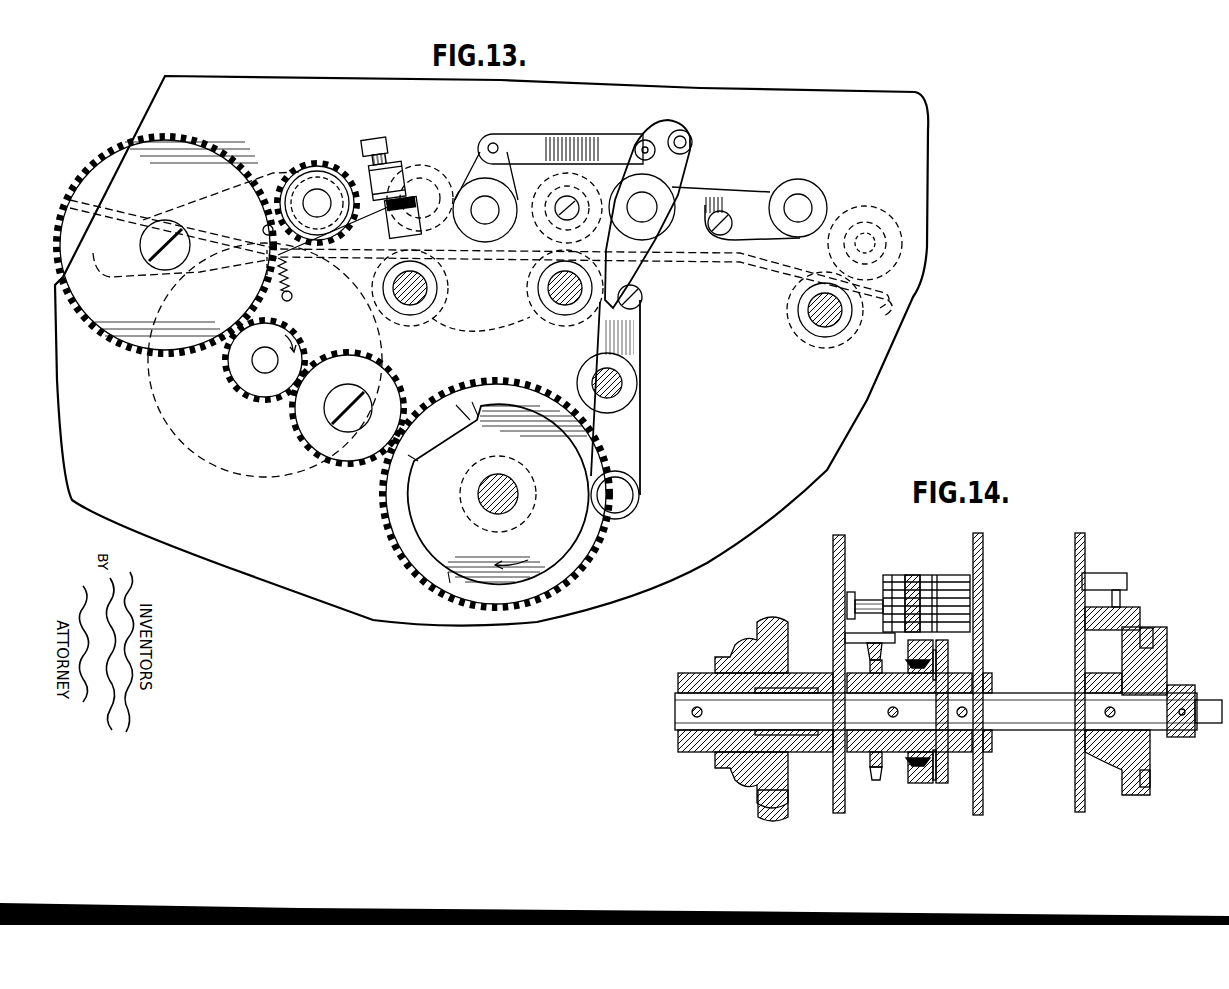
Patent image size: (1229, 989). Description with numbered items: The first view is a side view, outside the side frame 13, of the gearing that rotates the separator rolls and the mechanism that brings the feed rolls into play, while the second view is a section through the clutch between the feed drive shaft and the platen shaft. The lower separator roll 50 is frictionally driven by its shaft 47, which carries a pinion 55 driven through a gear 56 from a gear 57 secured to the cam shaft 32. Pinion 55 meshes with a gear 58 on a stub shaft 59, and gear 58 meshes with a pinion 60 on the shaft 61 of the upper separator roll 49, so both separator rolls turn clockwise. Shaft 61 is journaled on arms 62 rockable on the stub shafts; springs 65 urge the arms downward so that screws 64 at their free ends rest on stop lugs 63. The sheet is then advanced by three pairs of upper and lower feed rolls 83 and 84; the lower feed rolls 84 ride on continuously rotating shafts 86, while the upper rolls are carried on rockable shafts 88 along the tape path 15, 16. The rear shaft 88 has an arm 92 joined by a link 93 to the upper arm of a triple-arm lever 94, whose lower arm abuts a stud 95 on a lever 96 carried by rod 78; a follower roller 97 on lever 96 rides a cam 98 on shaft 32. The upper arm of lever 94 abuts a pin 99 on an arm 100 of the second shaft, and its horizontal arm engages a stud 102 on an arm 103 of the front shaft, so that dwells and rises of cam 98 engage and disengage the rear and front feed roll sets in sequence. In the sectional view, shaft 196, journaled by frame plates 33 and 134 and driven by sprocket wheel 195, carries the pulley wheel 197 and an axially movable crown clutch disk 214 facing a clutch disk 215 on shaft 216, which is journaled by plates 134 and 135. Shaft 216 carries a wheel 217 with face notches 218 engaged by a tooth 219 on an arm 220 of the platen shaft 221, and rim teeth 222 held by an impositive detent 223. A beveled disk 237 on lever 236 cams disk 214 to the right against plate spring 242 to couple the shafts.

In FIG. 13, the side frame 13 is at (262, 90).
In FIG. 13, the tape 15 is at (697, 252).
In FIG. 13, the tape 16 is at (700, 268).
In FIG. 13, the cam shaft 32 is at (510, 488).
In FIG. 13, the shaft 47 is at (255, 362).
In FIG. 13, the upper separator roll 49 is at (297, 160).
In FIG. 13, the lower separator roll 50 is at (226, 470).
In FIG. 13, the pinion 55 is at (248, 396).
In FIG. 13, the gear 56 is at (352, 446).
In FIG. 13, the gear 57 is at (397, 526).
In FIG. 13, the gear 58 is at (205, 142).
In FIG. 13, the stub shaft 59 is at (165, 228).
In FIG. 13, the pinion 60 is at (318, 164).
In FIG. 13, the shaft 61 is at (313, 200).
In FIG. 13, the arm 62 is at (403, 197).
In FIG. 13, the stop lug 63 is at (350, 225).
In FIG. 13, the screw 64 is at (392, 150).
In FIG. 13, the spring 65 is at (292, 278).
In FIG. 13, the rod 78 is at (624, 383).
In FIG. 13, the upper feed roll 83 is at (428, 182).
In FIG. 13, the lower feed roll 84 is at (490, 325).
In FIG. 13, the shaft 86 is at (555, 290).
In FIG. 13, the shaft 88 is at (497, 214).
In FIG. 13, the arm 92 is at (478, 162).
In FIG. 13, the link 93 is at (561, 140).
In FIG. 13, the triple-arm lever 94 is at (622, 265).
In FIG. 13, the stud 95 is at (641, 302).
In FIG. 13, the lever 96 is at (618, 428).
In FIG. 13, the cam follower roller 97 is at (636, 500).
In FIG. 13, the cam 98 is at (520, 415).
In FIG. 13, the pin 99 is at (688, 138).
In FIG. 13, the arm 100 is at (695, 162).
In FIG. 13, the stud 102 is at (728, 230).
In FIG. 13, the arm 103 is at (755, 205).
In FIG. 14, the side frame plate 33 is at (846, 555).
In FIG. 14, the frame plate 134 is at (984, 552).
In FIG. 14, the frame plate 135 is at (1086, 550).
In FIG. 14, the sprocket wheel 195 is at (884, 772).
In FIG. 14, the shaft 196 is at (790, 705).
In FIG. 14, the pulley wheel 197 is at (760, 644).
In FIG. 14, the crown clutch disk 214 is at (920, 784).
In FIG. 14, the clutch disk 215 is at (952, 655).
In FIG. 14, the shaft 216 is at (1015, 700).
In FIG. 14, the wheel 217 is at (1133, 756).
In FIG. 14, the notches 218 is at (1150, 784).
In FIG. 14, the tooth 219 is at (1150, 628).
In FIG. 14, the arm 220 is at (1168, 662).
In FIG. 14, the shaft 221 is at (1204, 726).
In FIG. 14, the teeth 222 is at (1130, 795).
In FIG. 14, the impositive detent 223 is at (1130, 607).
In FIG. 14, the lever 236 is at (882, 594).
In FIG. 14, the beveled disk 237 is at (918, 574).
In FIG. 14, the plate spring 242 is at (950, 775).